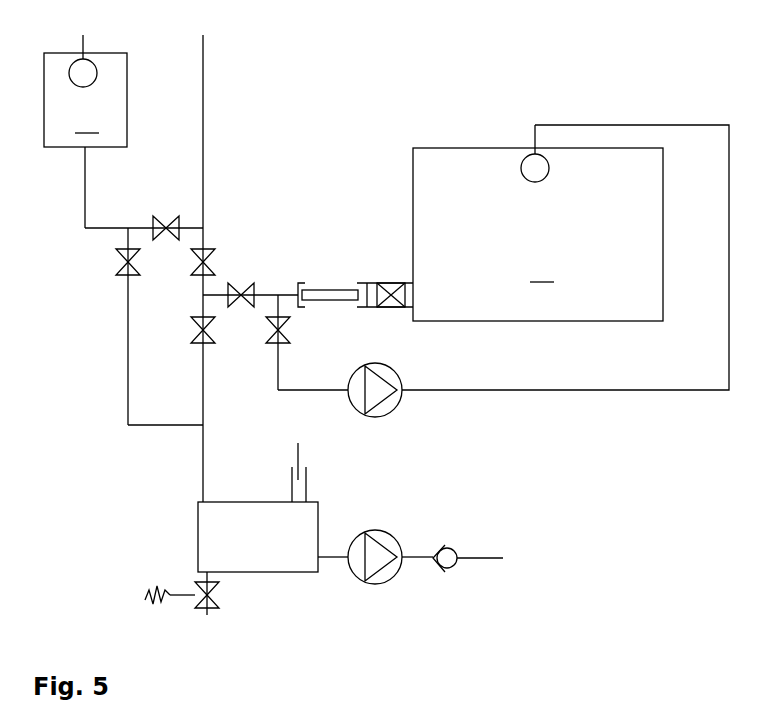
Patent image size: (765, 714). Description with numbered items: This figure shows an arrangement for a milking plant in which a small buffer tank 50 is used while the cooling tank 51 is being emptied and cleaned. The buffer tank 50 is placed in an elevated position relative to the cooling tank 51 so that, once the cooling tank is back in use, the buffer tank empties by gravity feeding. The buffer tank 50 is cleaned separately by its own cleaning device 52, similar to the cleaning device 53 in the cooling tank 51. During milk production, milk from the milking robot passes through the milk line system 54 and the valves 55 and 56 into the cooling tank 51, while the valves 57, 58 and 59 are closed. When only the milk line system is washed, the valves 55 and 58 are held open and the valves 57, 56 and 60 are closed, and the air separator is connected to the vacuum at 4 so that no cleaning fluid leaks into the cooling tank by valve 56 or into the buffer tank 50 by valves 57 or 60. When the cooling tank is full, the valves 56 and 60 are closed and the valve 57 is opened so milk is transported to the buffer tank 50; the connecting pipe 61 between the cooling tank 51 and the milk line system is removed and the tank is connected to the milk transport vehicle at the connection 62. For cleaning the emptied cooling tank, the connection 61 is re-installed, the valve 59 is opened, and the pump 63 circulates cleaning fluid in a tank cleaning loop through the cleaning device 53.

The vacuum connection 4 is at (292, 458).
The buffer tank 50 is at (85, 140).
The cooling tank 51 is at (538, 234).
The cleaning device 52 is at (80, 63).
The cleaning device 53 is at (532, 177).
The milk line system 54 is at (207, 256).
The valve 55 is at (220, 250).
The valve 56 is at (244, 286).
The valve 57 is at (166, 220).
The valve 58 is at (194, 340).
The valve 59 is at (288, 332).
The valve 60 is at (120, 260).
The connecting pipe 61 is at (336, 290).
The connection 62 is at (382, 282).
The pump 63 is at (388, 406).